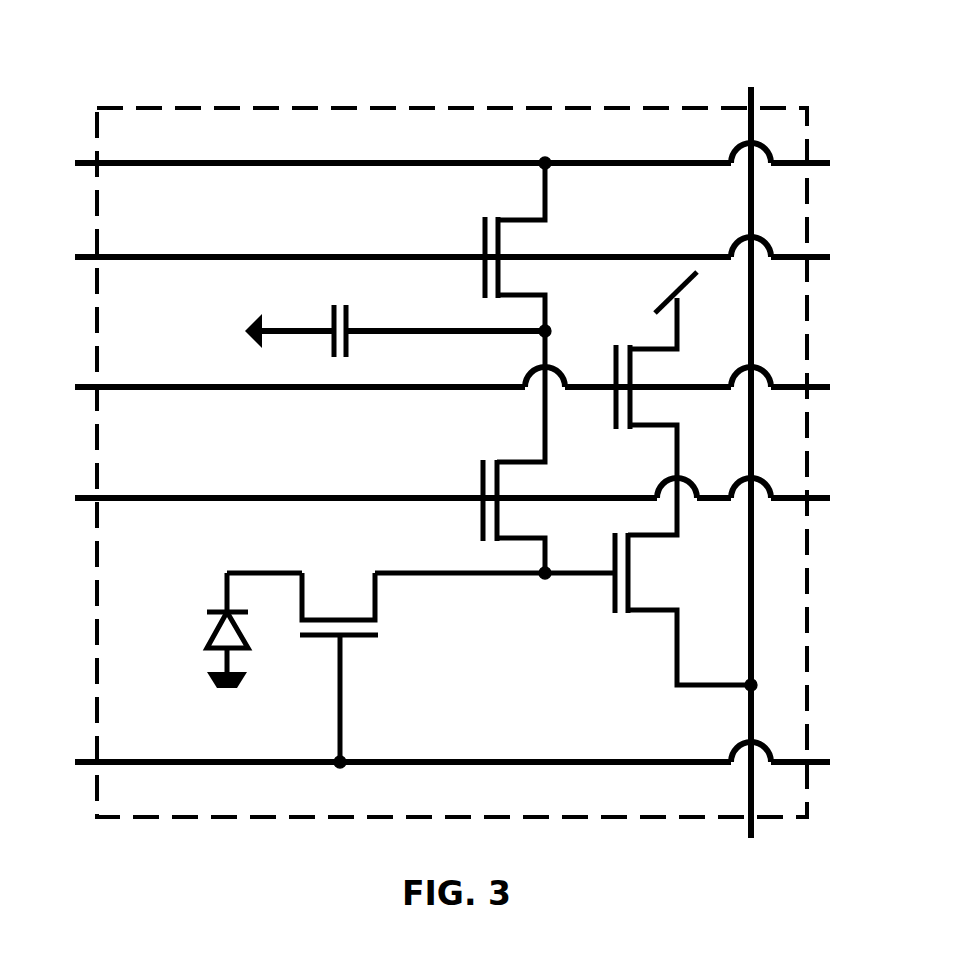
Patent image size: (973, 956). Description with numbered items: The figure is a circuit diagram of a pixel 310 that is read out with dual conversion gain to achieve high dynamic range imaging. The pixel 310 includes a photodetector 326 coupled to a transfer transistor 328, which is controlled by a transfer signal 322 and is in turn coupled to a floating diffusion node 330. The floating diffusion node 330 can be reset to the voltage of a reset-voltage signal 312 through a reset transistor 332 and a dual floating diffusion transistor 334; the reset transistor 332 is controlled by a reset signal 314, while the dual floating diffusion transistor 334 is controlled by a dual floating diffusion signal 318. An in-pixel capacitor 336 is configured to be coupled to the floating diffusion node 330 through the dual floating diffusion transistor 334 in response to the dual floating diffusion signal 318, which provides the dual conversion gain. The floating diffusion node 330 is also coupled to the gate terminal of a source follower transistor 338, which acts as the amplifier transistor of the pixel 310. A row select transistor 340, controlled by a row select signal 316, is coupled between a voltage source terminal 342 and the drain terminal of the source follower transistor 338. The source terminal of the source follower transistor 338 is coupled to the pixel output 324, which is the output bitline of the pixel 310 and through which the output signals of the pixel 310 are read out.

The pixel 310 is at (127, 106).
The RFD signal 312 is at (883, 160).
The RST signal 314 is at (883, 254).
The RS signal 316 is at (883, 384).
The DFD signal 318 is at (883, 495).
The TX signal 322 is at (870, 760).
The VPIX output 324 is at (778, 868).
The photodetector PD 326 is at (205, 622).
The transfer transistor 328 is at (385, 657).
The floating diffusion node 330 is at (538, 588).
The reset transistor 332 is at (552, 236).
The DFD transistor 334 is at (538, 482).
The in-pixel capacitor C 336 is at (360, 320).
The source follower transistor 338 is at (665, 552).
The row select transistor 340 is at (668, 370).
The voltage source terminal 342 is at (662, 297).